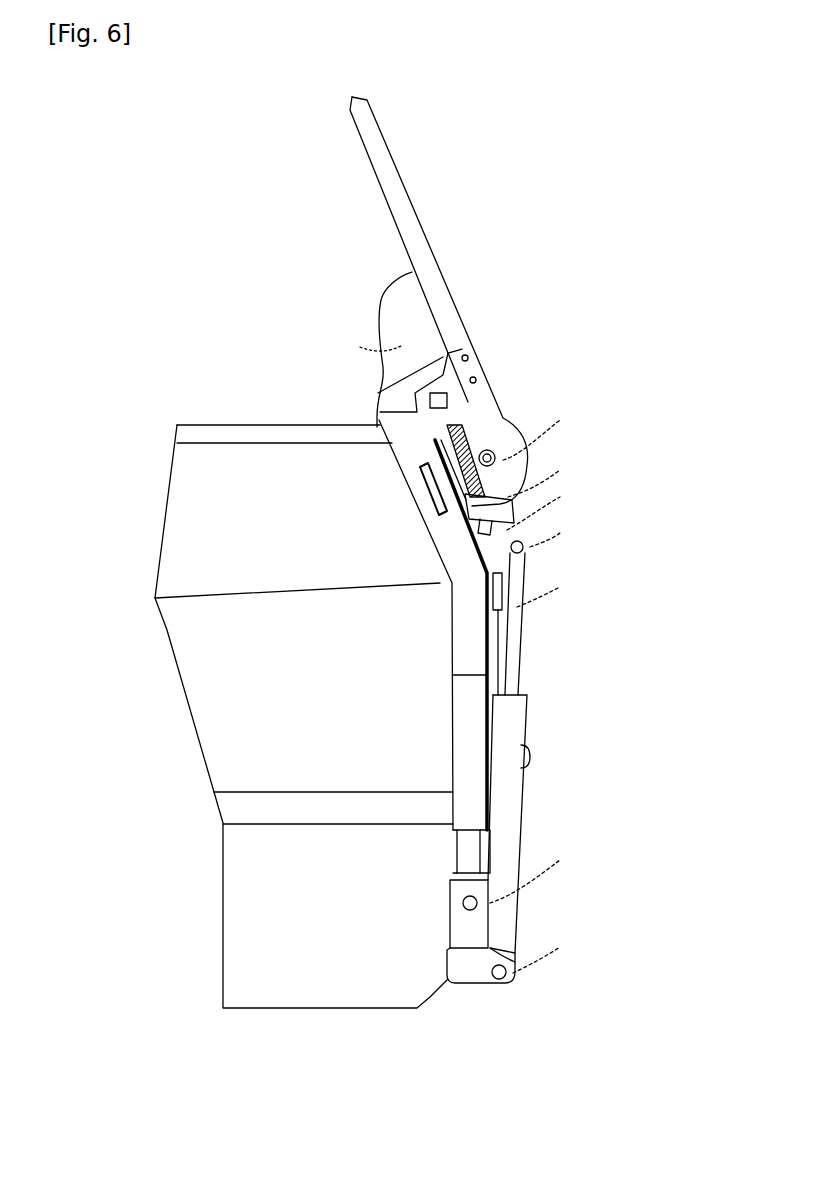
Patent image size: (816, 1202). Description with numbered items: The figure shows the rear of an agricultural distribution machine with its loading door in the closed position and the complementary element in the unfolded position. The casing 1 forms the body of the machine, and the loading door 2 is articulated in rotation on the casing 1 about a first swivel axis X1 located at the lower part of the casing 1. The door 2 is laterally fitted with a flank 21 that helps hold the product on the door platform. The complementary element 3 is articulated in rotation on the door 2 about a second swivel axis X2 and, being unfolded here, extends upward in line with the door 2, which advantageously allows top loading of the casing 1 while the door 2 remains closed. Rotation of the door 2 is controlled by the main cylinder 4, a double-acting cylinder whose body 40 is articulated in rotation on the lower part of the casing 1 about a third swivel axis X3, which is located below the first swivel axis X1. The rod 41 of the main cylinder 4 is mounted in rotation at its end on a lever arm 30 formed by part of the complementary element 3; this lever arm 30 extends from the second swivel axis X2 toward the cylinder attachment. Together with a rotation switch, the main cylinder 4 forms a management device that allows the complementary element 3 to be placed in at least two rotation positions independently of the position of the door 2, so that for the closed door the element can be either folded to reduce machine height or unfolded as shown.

The casing 1 is at (181, 711).
The loading door 2 is at (360, 298).
The flank 21 is at (383, 352).
The complementary element 3 is at (400, 177).
The lever arm 30 is at (520, 527).
The main cylinder 4 is at (546, 740).
The body of the main cylinder 40 is at (515, 805).
The rod of the main cylinder 41 is at (520, 608).
The first swivel axis X1 is at (490, 885).
The second swivel axis X2 is at (527, 452).
The third swivel axis X3 is at (525, 547).